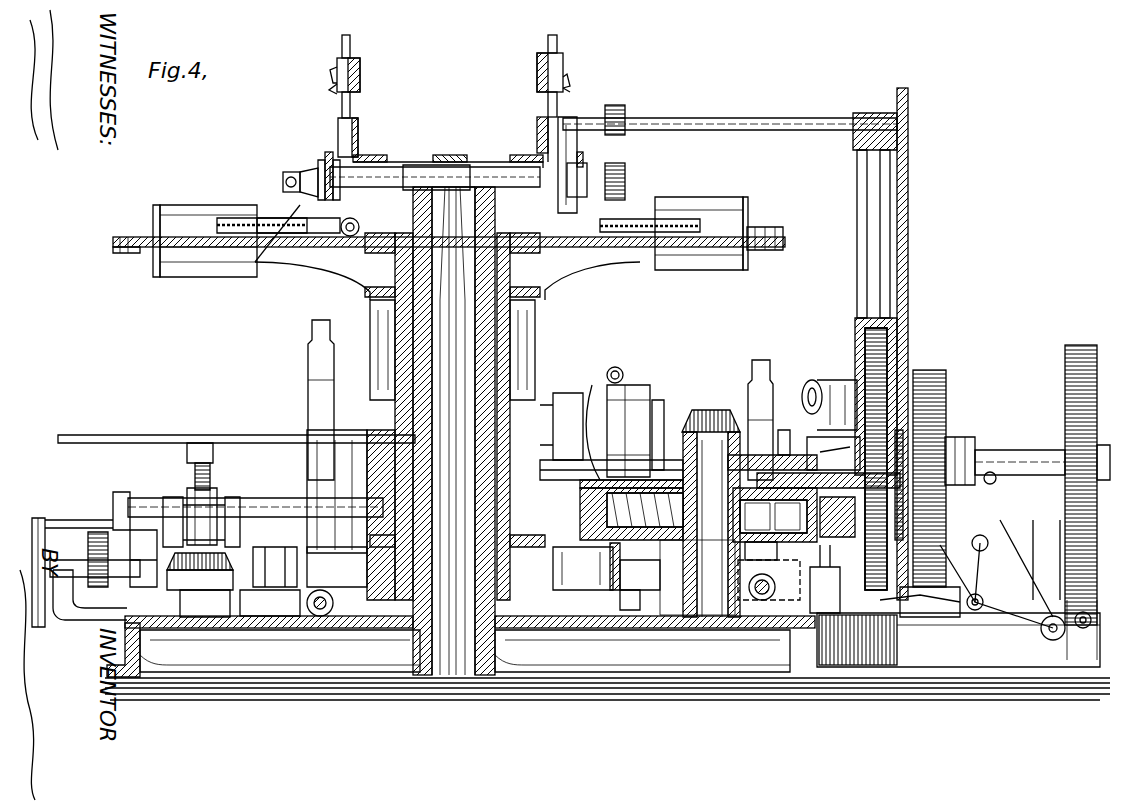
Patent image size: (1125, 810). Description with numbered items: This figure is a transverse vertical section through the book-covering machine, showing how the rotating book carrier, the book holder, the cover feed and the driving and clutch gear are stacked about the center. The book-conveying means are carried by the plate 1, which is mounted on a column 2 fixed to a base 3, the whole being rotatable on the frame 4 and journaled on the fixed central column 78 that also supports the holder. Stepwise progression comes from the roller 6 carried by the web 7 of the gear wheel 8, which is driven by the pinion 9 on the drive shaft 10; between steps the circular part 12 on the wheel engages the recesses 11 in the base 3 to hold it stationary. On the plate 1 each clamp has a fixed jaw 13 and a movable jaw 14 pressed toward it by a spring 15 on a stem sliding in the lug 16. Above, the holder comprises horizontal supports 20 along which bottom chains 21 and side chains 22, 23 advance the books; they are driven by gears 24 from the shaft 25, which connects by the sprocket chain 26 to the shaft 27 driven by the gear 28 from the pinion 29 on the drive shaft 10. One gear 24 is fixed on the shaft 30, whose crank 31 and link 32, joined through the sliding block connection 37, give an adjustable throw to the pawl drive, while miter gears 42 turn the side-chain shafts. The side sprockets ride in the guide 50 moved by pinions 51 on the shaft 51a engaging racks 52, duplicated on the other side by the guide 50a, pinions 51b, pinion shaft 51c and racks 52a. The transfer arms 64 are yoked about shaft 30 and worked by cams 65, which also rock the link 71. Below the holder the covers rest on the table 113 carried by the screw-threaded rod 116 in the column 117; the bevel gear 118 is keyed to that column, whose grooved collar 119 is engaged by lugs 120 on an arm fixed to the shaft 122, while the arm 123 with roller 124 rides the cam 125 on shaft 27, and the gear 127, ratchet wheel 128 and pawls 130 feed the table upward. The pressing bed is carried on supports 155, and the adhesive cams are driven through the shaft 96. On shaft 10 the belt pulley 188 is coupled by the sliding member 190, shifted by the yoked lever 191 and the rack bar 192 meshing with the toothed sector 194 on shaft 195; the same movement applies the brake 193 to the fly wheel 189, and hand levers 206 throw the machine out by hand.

The plate 1 is at (775, 232).
The column 2 is at (543, 296).
The base 3 is at (583, 568).
The frame 4 is at (280, 651).
The roller 6 is at (825, 579).
The web 7 is at (758, 516).
The gear wheel 8 is at (787, 516).
The pinion 9 is at (833, 453).
The shaft 10 is at (950, 455).
The circular recesses 11 is at (651, 586).
The circular part 12 is at (722, 618).
The jaw 13 is at (155, 212).
The jaw 14 is at (212, 213).
The spring 15 is at (290, 219).
The apertured lug 16 is at (352, 218).
The supports 20 is at (340, 124).
The endless chains or bands 21 is at (372, 156).
The chains or bands 22 is at (537, 64).
The chains or bands 23 is at (352, 74).
The gears 24 is at (625, 150).
The shaft 25 is at (780, 118).
The sprocket chain 26 is at (908, 244).
The shaft 27 is at (658, 440).
The gear 28 is at (888, 335).
The pinion 29 is at (890, 460).
The shaft 30 is at (440, 156).
The crank 31 is at (305, 170).
The link 32 is at (283, 183).
The sliding block connection 37 is at (318, 172).
The miter gears 42 is at (630, 600).
The guide piece 50 is at (537, 84).
The guide 50a is at (360, 72).
The pinions 51 is at (570, 80).
The shaft 51a is at (569, 92).
The pinions 51b is at (332, 88).
The pinion shaft 51c is at (333, 70).
The racks 52 is at (557, 40).
The racks 52a is at (350, 42).
The arms 64 is at (580, 152).
The cams 65 is at (580, 178).
The link 71 is at (640, 248).
The central column 78 is at (482, 654).
The shaft 96 is at (815, 382).
The table 113 is at (250, 435).
The screw-threaded rod 116 is at (210, 475).
The column 117 is at (217, 500).
The bevel gear 118 is at (235, 582).
The grooved collar 119 is at (178, 505).
The lugs 120 is at (225, 512).
The shaft 122 is at (343, 508).
The arm 123 is at (592, 385).
The roller 124 is at (568, 393).
The cam 125 is at (620, 368).
The gear 127 is at (122, 595).
The ratchet wheel 128 is at (92, 558).
The pawls 130 is at (73, 522).
The supports 155 is at (385, 342).
The belt pulley 188 is at (928, 380).
The fly wheel 189 is at (1068, 435).
The sliding member 190 is at (960, 445).
The yoked lever 191 is at (1040, 640).
The sliding rack bar 192 is at (912, 608).
The brake 193 is at (775, 582).
The toothed sector 194 is at (787, 549).
The shaft 195 is at (765, 600).
The hand levers 206 is at (310, 355).